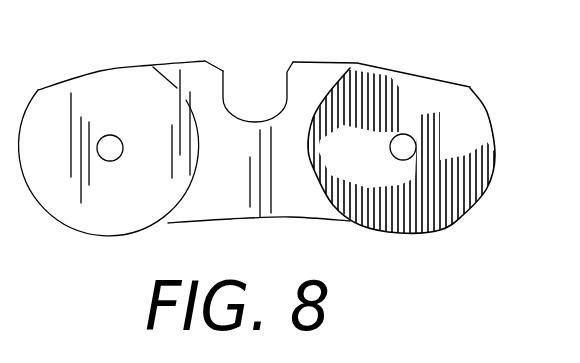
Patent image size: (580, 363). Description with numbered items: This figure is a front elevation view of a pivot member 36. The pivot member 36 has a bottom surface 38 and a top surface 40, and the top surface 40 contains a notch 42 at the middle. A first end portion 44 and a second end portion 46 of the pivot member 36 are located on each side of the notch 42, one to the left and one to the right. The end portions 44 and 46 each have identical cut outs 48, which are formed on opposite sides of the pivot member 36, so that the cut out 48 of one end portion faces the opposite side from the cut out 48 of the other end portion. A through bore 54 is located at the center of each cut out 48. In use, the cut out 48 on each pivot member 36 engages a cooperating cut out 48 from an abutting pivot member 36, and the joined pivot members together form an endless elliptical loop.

The pivot member 36 is at (471, 228).
The bottom surface 38 is at (322, 218).
The top surface 40 is at (457, 80).
The notch 42 is at (262, 77).
The first end portion 44 is at (117, 70).
The second end portion 46 is at (400, 68).
The cut out 48 is at (474, 135).
The through bore 54 is at (110, 161).